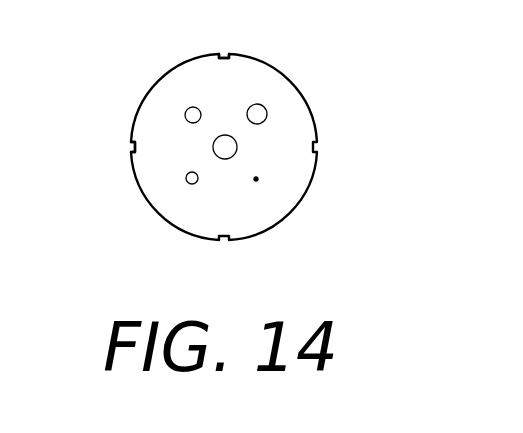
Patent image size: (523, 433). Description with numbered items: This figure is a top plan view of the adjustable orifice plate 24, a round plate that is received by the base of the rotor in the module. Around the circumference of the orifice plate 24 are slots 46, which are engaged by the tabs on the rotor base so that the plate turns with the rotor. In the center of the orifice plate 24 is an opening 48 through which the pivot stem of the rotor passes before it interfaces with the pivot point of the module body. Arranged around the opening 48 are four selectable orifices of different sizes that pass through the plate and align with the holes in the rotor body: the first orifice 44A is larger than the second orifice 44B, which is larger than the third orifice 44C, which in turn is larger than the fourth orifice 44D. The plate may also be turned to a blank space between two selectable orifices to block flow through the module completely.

The orifice plate 24 is at (378, 72).
The slots 46 is at (221, 52).
The first orifice 44A is at (265, 104).
The second orifice 44B is at (187, 109).
The opening 48 is at (213, 147).
The third orifice 44C is at (188, 184).
The fourth orifice 44D is at (258, 179).